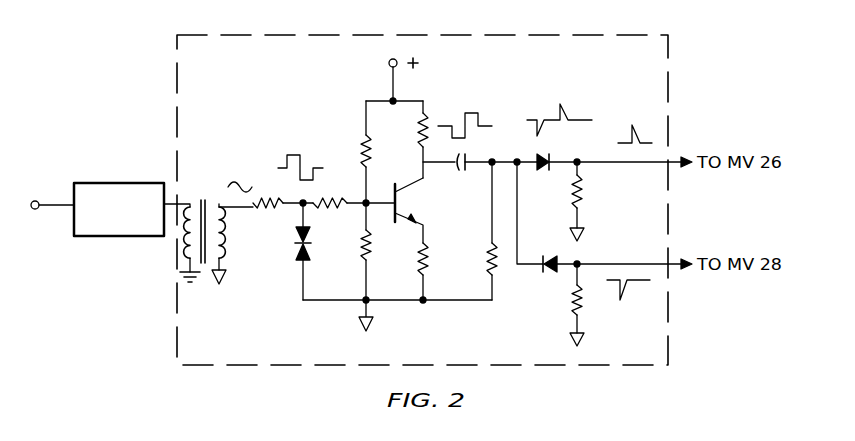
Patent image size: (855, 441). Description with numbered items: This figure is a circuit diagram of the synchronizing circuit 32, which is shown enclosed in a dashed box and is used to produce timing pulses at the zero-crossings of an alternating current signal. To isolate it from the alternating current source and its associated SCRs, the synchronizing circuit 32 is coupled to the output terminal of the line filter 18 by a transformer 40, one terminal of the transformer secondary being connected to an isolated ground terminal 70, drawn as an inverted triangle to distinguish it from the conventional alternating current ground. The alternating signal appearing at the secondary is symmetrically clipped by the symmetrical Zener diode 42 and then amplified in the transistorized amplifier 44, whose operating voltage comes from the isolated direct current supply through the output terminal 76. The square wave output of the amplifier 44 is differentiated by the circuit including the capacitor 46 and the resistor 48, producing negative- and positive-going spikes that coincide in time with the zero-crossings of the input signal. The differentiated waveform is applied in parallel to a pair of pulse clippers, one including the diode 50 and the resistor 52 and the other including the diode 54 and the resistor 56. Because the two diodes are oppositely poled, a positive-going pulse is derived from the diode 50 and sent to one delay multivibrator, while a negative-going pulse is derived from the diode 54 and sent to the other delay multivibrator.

The line filter 18 is at (93, 183).
The synchronizing circuit 32 is at (503, 35).
The transformer 40 is at (203, 199).
The symmetrical Zener diode 42 is at (308, 243).
The transistorized amplifier 44 is at (405, 252).
The capacitor 46 is at (457, 171).
The resistor 48 is at (486, 257).
The diode 50 is at (551, 169).
The resistor 52 is at (583, 192).
The diode 54 is at (541, 272).
The resistor 56 is at (586, 298).
The isolated ground terminal 70 is at (228, 270).
The output terminal 76 is at (389, 62).